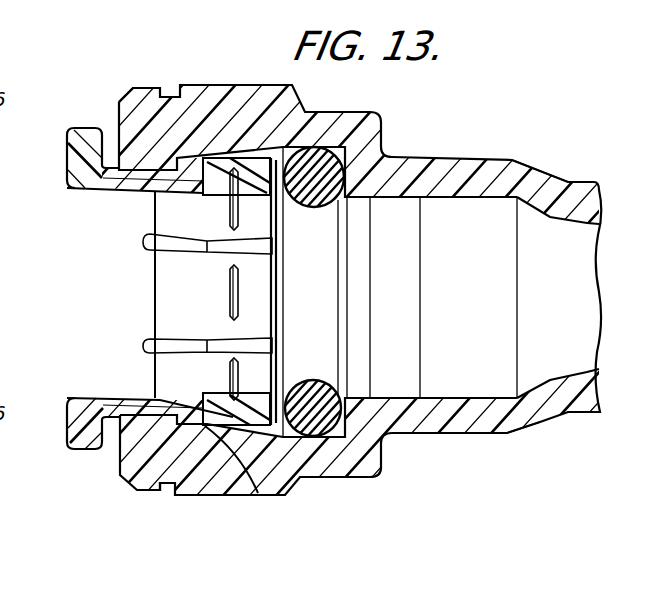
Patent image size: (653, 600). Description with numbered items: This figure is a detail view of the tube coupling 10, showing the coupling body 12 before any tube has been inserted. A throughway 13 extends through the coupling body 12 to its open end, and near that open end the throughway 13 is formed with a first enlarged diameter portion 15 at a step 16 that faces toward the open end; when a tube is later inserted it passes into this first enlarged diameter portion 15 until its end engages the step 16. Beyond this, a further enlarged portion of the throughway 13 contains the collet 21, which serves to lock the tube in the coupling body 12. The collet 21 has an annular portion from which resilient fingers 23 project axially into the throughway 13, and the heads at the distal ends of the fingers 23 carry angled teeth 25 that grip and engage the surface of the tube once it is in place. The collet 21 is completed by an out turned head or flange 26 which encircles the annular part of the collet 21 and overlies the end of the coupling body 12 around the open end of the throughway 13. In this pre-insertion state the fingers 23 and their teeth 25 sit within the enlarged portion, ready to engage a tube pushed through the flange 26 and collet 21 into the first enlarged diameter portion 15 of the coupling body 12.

The tube coupling 10 is at (140, 86).
The coupling body 12 is at (343, 133).
The throughway 13 is at (588, 378).
The first enlarged diameter portion 15 is at (454, 193).
The step 16 is at (513, 201).
The collet 21 is at (122, 191).
The resilient fingers 23 is at (152, 489).
The angled teeth 25 is at (227, 497).
The out turned head or flange 26 is at (326, 168).